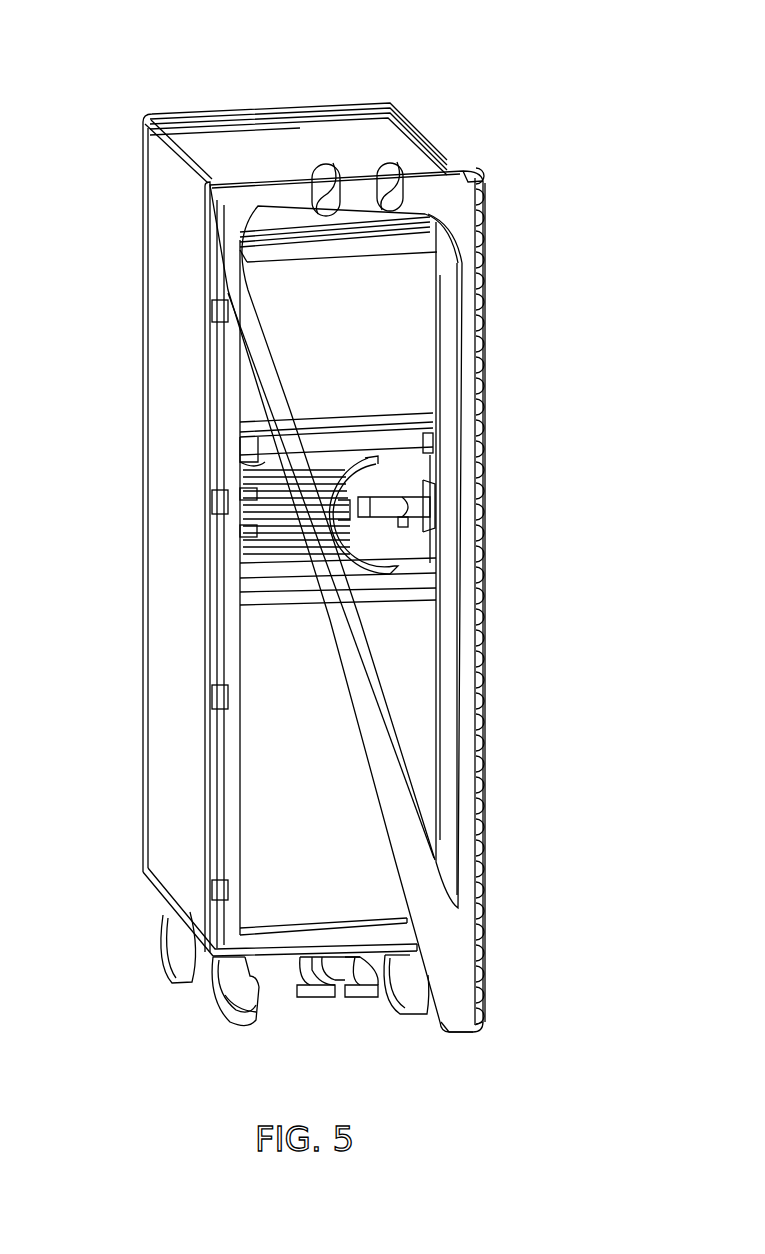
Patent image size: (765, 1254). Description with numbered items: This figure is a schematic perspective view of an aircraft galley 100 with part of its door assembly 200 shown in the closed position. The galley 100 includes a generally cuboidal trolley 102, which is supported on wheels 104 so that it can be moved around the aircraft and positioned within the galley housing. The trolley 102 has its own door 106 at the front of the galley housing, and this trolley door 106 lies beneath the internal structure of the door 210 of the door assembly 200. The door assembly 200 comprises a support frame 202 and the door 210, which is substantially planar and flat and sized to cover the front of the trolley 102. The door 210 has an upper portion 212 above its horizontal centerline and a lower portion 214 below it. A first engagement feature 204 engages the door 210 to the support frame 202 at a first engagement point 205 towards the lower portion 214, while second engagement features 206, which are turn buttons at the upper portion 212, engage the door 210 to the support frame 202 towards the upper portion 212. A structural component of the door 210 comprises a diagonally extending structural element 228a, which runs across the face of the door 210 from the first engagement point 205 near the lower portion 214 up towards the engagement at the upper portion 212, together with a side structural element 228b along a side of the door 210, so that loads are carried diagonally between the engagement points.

The aircraft galley 100 is at (543, 61).
The trolley 102 is at (183, 355).
The wheels 104 is at (195, 952).
The trolley door 106 is at (265, 675).
The door assembly 200 is at (488, 182).
The support frame 202 is at (484, 622).
The first engagement feature 204 is at (483, 926).
The first engagement point 205 is at (466, 946).
The second engagement features 206 is at (347, 160).
The door 210 is at (440, 380).
The upper portion 212 is at (490, 245).
The lower portion 214 is at (485, 1018).
The diagonally extending structural element 228a is at (350, 588).
The side structural element 228b is at (265, 192).